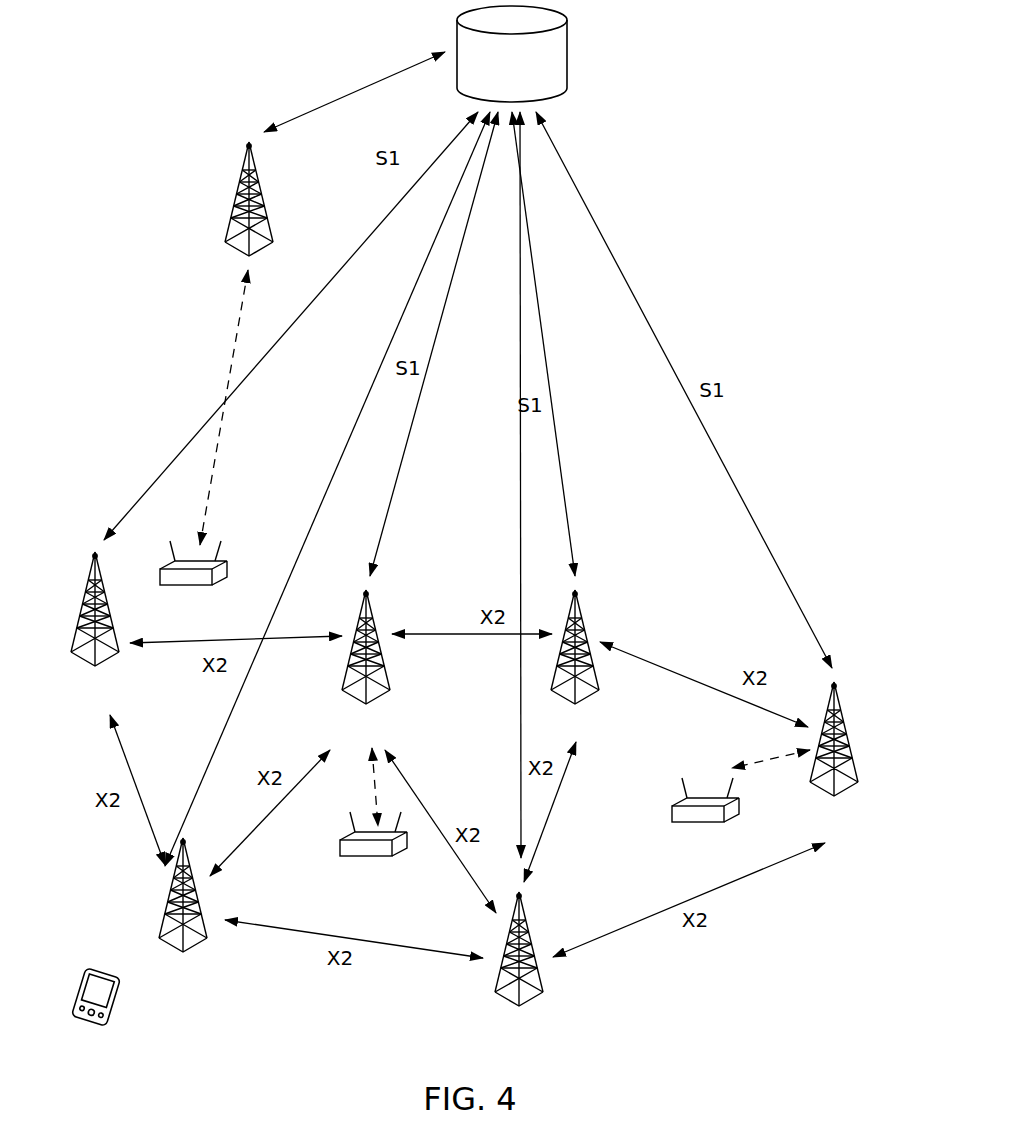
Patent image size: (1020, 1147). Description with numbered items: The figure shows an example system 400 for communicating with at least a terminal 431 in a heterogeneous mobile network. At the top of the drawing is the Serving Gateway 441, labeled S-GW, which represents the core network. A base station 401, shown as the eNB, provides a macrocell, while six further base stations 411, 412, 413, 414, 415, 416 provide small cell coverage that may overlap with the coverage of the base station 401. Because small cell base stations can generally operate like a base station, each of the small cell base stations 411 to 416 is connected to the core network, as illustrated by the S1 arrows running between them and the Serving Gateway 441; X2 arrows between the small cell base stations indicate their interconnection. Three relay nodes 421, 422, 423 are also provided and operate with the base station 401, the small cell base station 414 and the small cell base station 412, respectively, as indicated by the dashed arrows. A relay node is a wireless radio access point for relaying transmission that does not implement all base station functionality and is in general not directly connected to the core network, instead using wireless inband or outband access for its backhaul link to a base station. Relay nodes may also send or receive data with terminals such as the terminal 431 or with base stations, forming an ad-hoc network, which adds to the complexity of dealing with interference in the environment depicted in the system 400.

The system 400 is at (678, 157).
The base station 401 is at (262, 198).
The small cell base station 411 is at (90, 573).
The small cell base station 412 is at (377, 607).
The small cell base station 413 is at (585, 607).
The small cell base station 414 is at (846, 722).
The small cell base station 415 is at (530, 930).
The small cell base station 416 is at (165, 915).
The relay node 421 is at (232, 563).
The relay node 422 is at (683, 797).
The relay node 423 is at (400, 858).
The terminal 431 is at (95, 1028).
The serving gateway (S-GW) 441 is at (569, 62).